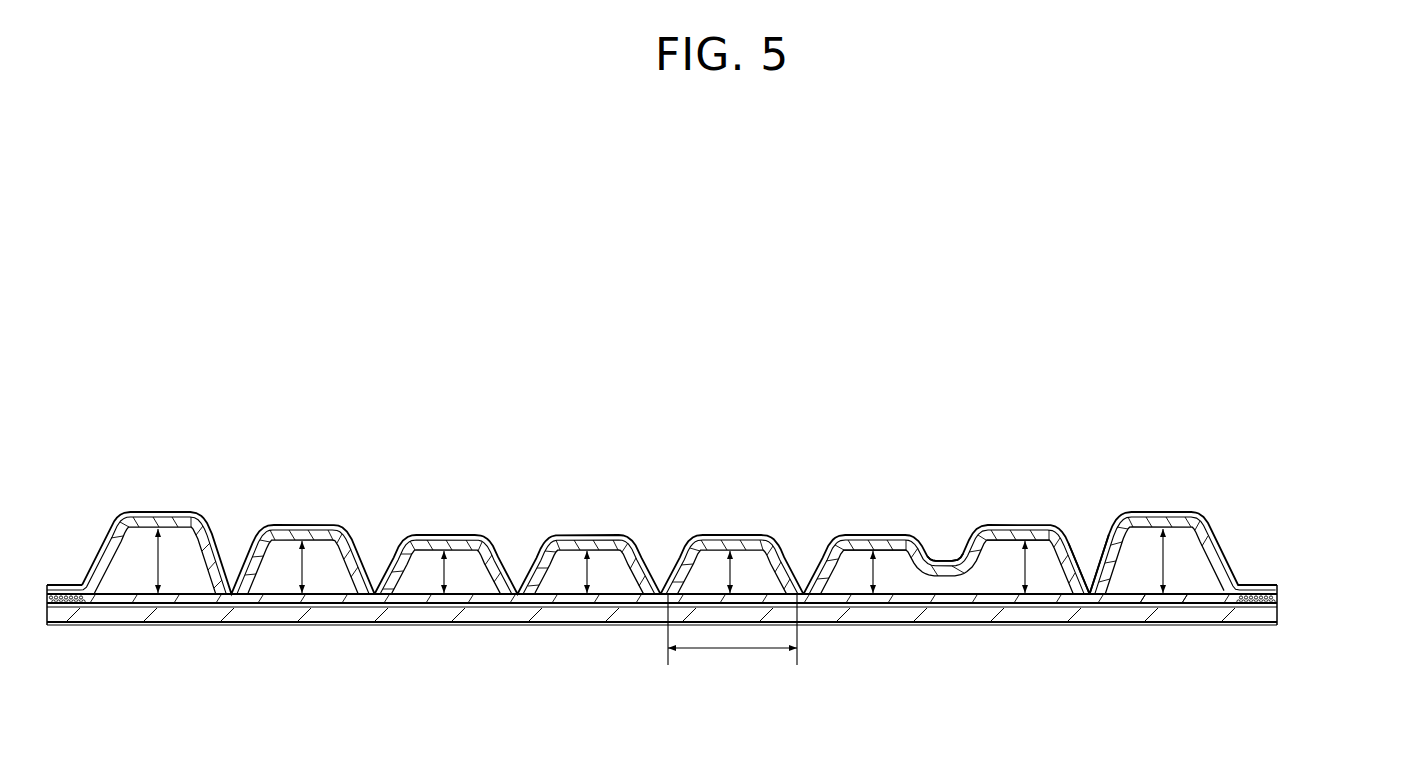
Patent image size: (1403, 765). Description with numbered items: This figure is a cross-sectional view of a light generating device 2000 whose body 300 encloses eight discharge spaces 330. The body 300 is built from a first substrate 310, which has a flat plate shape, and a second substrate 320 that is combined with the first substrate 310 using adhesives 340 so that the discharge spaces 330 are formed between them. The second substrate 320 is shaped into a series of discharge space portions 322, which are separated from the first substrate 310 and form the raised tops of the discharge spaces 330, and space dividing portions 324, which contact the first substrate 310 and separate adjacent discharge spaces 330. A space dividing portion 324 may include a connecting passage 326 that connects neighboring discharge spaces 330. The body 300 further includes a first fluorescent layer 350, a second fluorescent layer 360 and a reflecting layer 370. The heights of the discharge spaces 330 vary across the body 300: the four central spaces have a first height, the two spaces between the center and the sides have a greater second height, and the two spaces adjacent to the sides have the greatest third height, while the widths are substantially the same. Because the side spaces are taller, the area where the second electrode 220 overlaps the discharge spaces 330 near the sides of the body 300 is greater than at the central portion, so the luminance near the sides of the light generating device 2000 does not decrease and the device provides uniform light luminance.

The light generating device 2000 is at (767, 147).
The second electrode 220 is at (1256, 585).
The body 300 is at (1343, 556).
The first substrate 310 is at (1278, 613).
The second substrate 320 is at (1278, 589).
The discharge space portions 322 is at (1138, 514).
The space dividing portions 324 is at (1090, 578).
The connecting passage 326 is at (945, 558).
The discharge spaces 330 is at (864, 568).
The adhesives 340 is at (1278, 600).
The first fluorescent layer 350 is at (1068, 601).
The second fluorescent layer 360 is at (1007, 541).
The reflecting layer 370 is at (1160, 603).